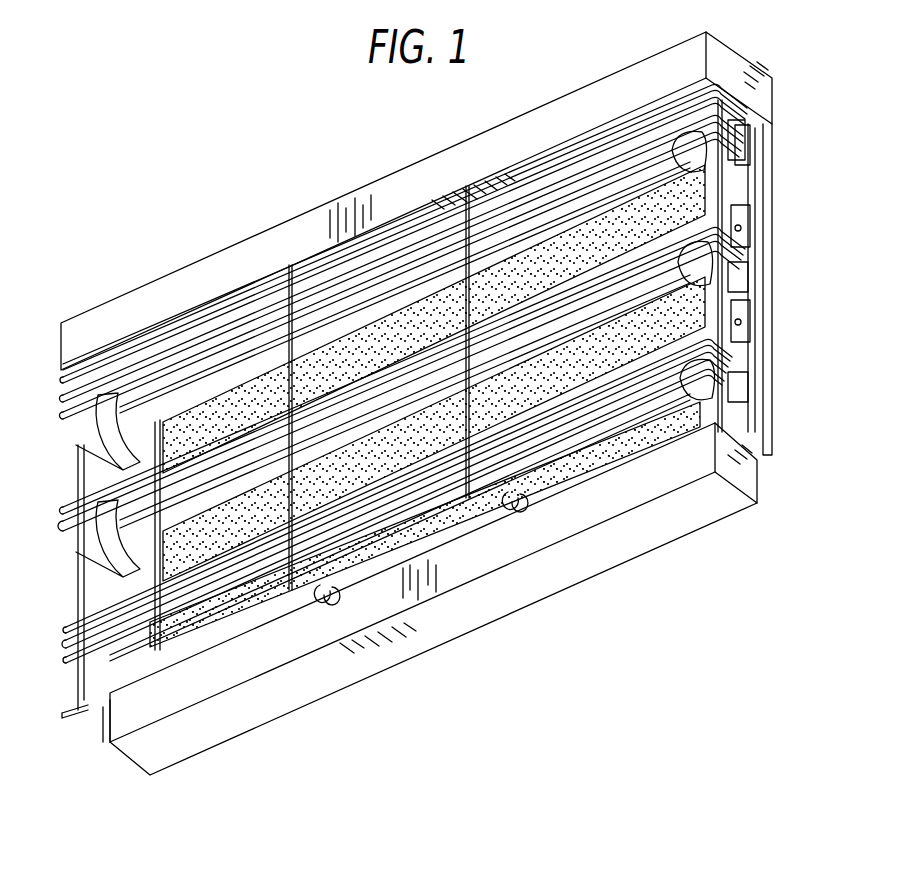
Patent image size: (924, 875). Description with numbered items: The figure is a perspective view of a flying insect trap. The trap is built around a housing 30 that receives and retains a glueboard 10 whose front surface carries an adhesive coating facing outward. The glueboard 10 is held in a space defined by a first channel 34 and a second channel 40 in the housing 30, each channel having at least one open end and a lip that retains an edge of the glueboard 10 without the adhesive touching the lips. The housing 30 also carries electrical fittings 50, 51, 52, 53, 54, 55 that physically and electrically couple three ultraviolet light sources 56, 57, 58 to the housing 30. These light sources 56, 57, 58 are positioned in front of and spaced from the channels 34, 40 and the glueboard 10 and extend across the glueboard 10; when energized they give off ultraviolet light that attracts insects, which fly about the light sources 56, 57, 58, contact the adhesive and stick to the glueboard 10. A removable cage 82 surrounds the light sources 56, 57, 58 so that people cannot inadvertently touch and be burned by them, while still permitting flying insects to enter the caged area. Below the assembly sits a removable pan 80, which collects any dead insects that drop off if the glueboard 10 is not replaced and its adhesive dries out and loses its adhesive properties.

The glueboard 10 is at (390, 470).
The housing 30 is at (533, 122).
The first channel 34 is at (146, 553).
The second channel 40 is at (706, 201).
The electrical fitting 50 is at (90, 447).
The electrical fitting 51 is at (753, 158).
The electrical fitting 52 is at (78, 540).
The electrical fitting 53 is at (757, 286).
The electrical fitting 54 is at (117, 673).
The electrical fitting 55 is at (753, 390).
The ultraviolet light source 56 is at (528, 235).
The ultraviolet light source 57 is at (565, 322).
The ultraviolet light source 58 is at (170, 580).
The removable pan 80 is at (222, 720).
The removable cage 82 is at (63, 656).